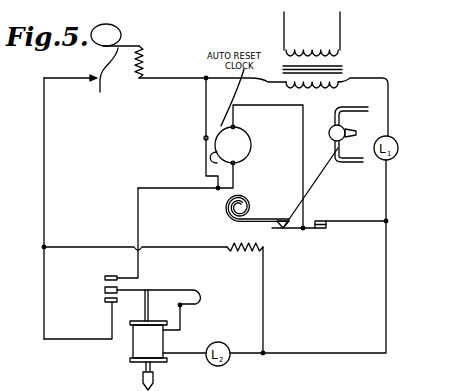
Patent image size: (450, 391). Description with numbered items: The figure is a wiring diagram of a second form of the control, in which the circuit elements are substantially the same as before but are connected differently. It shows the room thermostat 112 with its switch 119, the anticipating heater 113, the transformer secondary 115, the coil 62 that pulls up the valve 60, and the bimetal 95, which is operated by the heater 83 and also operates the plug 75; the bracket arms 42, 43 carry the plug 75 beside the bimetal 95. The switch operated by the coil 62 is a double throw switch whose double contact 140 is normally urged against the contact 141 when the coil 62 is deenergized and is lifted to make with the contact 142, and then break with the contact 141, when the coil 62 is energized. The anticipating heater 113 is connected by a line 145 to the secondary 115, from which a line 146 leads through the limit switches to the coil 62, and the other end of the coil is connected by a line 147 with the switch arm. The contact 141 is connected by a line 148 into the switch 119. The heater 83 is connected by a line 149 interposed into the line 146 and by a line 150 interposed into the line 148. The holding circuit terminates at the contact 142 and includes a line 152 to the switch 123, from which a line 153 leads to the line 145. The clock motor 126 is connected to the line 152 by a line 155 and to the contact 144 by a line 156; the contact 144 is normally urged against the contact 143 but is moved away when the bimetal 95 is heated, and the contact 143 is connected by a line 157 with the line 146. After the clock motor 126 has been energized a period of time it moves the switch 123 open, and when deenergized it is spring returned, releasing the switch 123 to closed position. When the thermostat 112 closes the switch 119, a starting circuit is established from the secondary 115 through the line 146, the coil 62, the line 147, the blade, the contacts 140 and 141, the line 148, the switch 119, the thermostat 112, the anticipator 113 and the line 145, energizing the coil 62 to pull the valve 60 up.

The room thermostat 112 is at (121, 32).
The anticipating heater 113 is at (146, 58).
The secondary 115 is at (341, 74).
The switch 119 is at (92, 96).
The switch 123 is at (205, 150).
The clock motor 126 is at (240, 145).
The double contact 140 is at (105, 290).
The contact 141 is at (105, 302).
The contact 142 is at (108, 275).
The contact 143 is at (323, 221).
The contact 144 is at (318, 229).
The line 145 is at (178, 83).
The line 146 is at (391, 85).
The line 147 is at (185, 323).
The line 148 is at (89, 338).
The line 149 is at (265, 322).
The line 150 is at (90, 245).
The line 152 is at (140, 223).
The line 153 is at (206, 122).
The line 155 is at (234, 178).
The line 156 is at (309, 193).
The line 157 is at (360, 223).
The upper bracket arm 42 is at (362, 108).
The lower bracket arm 43 is at (353, 162).
The plug 75 is at (351, 133).
The heater 83 is at (250, 253).
The bimetal 95 is at (236, 222).
The coil 62 is at (141, 345).
The valve 60 is at (154, 378).